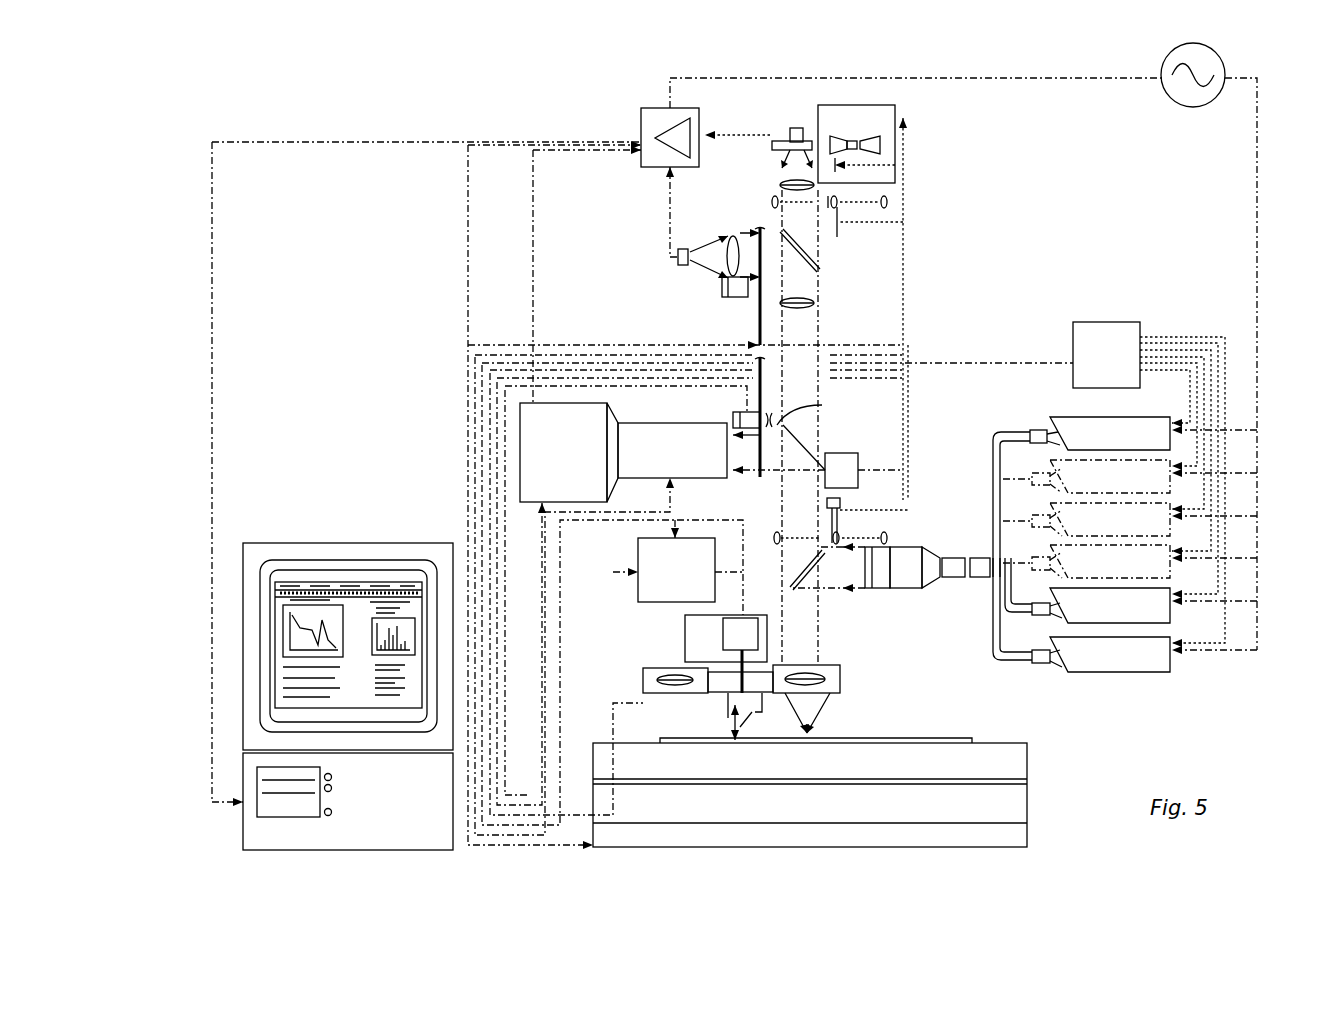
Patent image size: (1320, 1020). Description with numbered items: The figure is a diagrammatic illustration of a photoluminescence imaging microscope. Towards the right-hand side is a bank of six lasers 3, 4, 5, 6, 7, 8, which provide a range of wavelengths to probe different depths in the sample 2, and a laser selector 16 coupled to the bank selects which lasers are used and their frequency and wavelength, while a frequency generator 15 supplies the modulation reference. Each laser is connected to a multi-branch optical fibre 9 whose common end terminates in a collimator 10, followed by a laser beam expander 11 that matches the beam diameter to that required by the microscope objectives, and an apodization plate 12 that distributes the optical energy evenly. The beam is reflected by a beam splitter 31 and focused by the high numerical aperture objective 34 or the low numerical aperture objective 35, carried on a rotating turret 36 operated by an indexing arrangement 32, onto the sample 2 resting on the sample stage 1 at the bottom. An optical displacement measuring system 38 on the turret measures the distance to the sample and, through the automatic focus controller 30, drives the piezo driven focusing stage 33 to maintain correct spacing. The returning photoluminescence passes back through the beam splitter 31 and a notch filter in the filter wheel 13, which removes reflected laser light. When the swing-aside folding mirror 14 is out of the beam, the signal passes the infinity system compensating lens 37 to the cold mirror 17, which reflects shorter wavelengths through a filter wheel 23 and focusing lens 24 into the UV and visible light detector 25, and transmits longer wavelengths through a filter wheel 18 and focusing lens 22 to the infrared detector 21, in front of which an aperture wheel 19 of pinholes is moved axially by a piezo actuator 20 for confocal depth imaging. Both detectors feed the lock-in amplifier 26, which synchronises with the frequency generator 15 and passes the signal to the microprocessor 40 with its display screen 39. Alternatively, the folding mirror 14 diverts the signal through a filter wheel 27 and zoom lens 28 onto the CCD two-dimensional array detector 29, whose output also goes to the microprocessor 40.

The sample stage 1 is at (1015, 830).
The sample 2 is at (972, 740).
The laser 3 is at (1163, 660).
The laser 4 is at (1155, 605).
The laser 5 is at (1155, 560).
The laser 6 is at (1155, 517).
The laser 7 is at (1152, 472).
The laser 8 is at (1152, 432).
The multi-branch optical fibre 9 is at (978, 558).
The collimator 10 is at (957, 577).
The laser beam expander 11 is at (902, 555).
The apodization plate 12 is at (870, 590).
The filter wheel for laser notch filters 13 is at (838, 505).
The swing-aside folding mirror 14 is at (851, 460).
The frequency generator 15 is at (1183, 95).
The laser selector 16 is at (1080, 325).
The cold mirror 17 is at (815, 272).
The filter wheel 18 is at (833, 235).
The aperture wheel 19 is at (828, 175).
The piezo actuator 20 is at (882, 113).
The infrared detector 21 is at (800, 128).
The focusing lens 22 is at (782, 183).
The filter wheel 23 is at (722, 290).
The focusing lens 24 is at (733, 235).
The UV and visible light detector 25 is at (683, 248).
The lock-in amplifier 26 is at (650, 163).
The filter wheel for wavelength selection 27 is at (733, 415).
The zoom lens 28 is at (723, 473).
The CCD two-dimensional array detector 29 is at (597, 412).
The automatic focus controller 30 is at (648, 552).
The beam splitter 31 is at (802, 570).
The microscope objective indexing arrangement 32 is at (755, 638).
The piezo driven focusing stage 33 is at (695, 635).
The high numerical aperture objective 34 is at (822, 683).
The low numerical aperture objective 35 is at (667, 685).
The rotating turret 36 is at (725, 683).
The infinity system compensating lens 37 is at (820, 305).
The optical displacement measuring system 38 is at (745, 703).
The display screen 39 is at (432, 548).
The microprocessor 40 is at (243, 830).